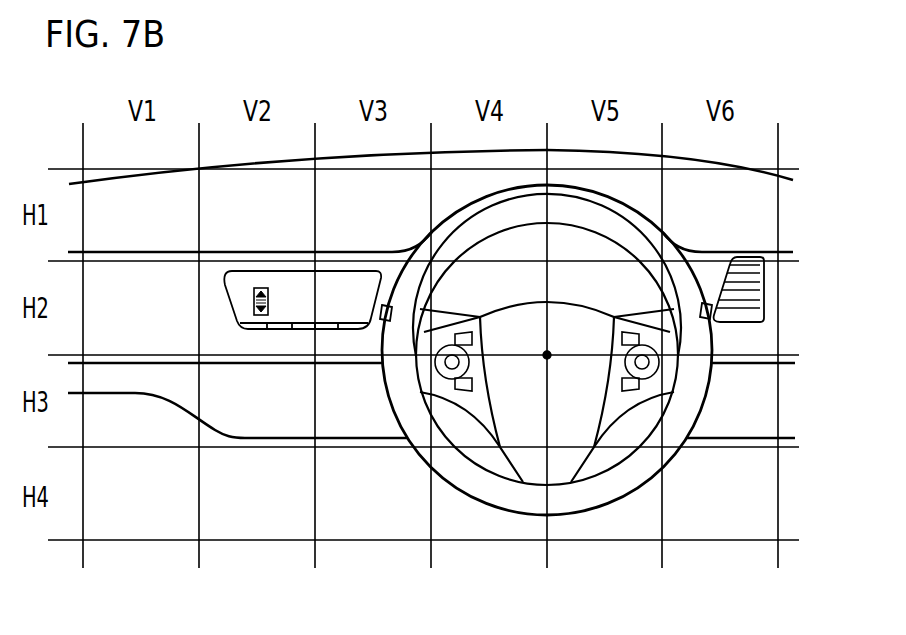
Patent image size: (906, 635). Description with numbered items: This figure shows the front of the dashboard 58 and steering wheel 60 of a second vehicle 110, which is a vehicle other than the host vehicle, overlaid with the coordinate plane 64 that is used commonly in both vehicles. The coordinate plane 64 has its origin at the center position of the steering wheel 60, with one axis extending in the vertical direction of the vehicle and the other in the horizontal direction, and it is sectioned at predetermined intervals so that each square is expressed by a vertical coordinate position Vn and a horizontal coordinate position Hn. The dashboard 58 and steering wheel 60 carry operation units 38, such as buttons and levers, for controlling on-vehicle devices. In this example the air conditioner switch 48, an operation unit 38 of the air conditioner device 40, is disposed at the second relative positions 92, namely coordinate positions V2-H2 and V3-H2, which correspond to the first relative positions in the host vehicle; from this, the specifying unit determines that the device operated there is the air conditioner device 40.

The second vehicle 110 is at (393, 73).
The dashboard 58 is at (233, 159).
The second relative position 92 is at (265, 252).
The air conditioner device 40 is at (237, 332).
The air conditioner switch 48 is at (277, 348).
The operation unit 38 is at (260, 327).
The steering wheel 60 is at (463, 493).
The coordinate plane 64 is at (152, 542).